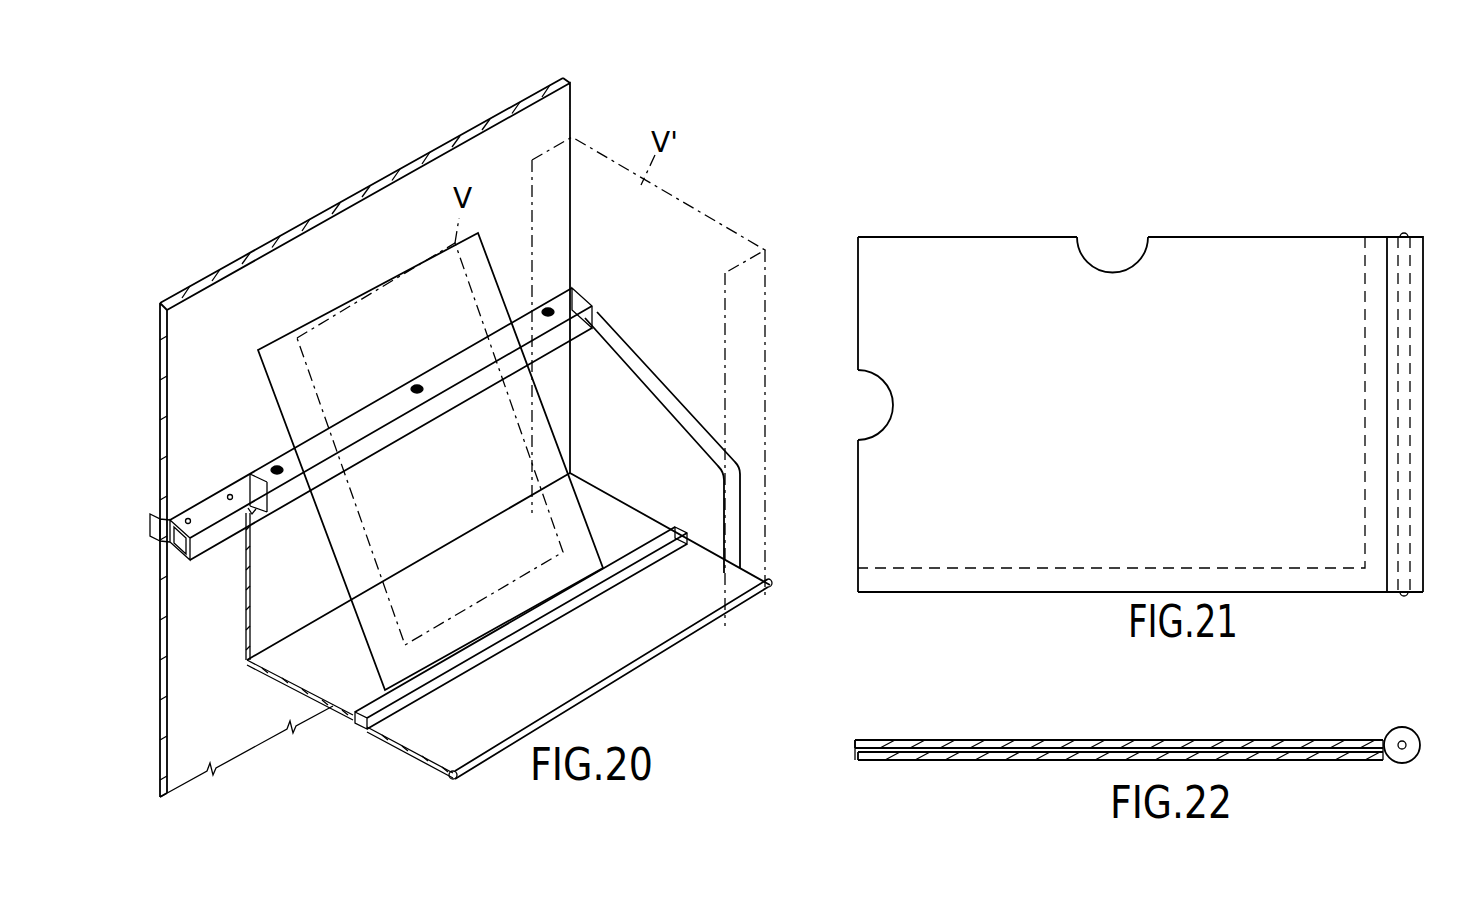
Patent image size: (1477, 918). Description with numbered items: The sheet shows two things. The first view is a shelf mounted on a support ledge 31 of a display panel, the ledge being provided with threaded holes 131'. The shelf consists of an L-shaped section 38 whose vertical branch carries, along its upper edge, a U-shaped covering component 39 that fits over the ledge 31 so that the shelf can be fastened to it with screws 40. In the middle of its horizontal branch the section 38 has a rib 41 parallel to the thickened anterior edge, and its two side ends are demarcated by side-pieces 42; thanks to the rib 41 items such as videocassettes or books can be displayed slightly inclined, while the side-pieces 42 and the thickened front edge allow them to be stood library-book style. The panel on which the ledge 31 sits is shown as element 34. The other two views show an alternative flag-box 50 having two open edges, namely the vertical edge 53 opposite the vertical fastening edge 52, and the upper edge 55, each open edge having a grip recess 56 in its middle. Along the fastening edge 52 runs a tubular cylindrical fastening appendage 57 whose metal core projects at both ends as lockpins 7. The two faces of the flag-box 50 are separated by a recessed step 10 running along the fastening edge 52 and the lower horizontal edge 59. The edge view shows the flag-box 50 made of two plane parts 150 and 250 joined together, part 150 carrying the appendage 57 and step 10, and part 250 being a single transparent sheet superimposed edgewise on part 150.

In FIG. 20, the back panel 34 is at (262, 272).
In FIG. 20, the covering component 39 is at (283, 498).
In FIG. 20, the support ledge 31 is at (181, 546).
In FIG. 20, the threaded holes 131' is at (211, 480).
In FIG. 20, the screws 40 is at (417, 386).
In FIG. 20, the L-shaped section 38 is at (287, 687).
In FIG. 20, the rib 41 is at (378, 710).
In FIG. 20, the side-pieces 42 is at (660, 400).
In FIG. 21, the flag-box 50 is at (1206, 231).
In FIG. 21, the upper edge 55 is at (1010, 236).
In FIG. 21, the vertical edge 53 is at (857, 278).
In FIG. 22, the vertical edge 53 is at (855, 750).
In FIG. 21, the grip recess 56 is at (1121, 269).
In FIG. 21, the lower horizontal edge 59 is at (1058, 594).
In FIG. 21, the cylindrical fastening appendage 57 is at (1422, 327).
In FIG. 22, the cylindrical fastening appendage 57 is at (1420, 742).
In FIG. 21, the vertical fastening edge 52 is at (1380, 397).
In FIG. 22, the vertical fastening edge 52 is at (1379, 740).
In FIG. 21, the recessed step 10 is at (1360, 552).
In FIG. 22, the recessed step 10 is at (1216, 740).
In FIG. 21, the lockpins 7 is at (1404, 234).
In FIG. 22, the lockpins 7 is at (1399, 763).
In FIG. 22, the plane part 150 is at (973, 740).
In FIG. 22, the plane part 250 is at (1020, 756).